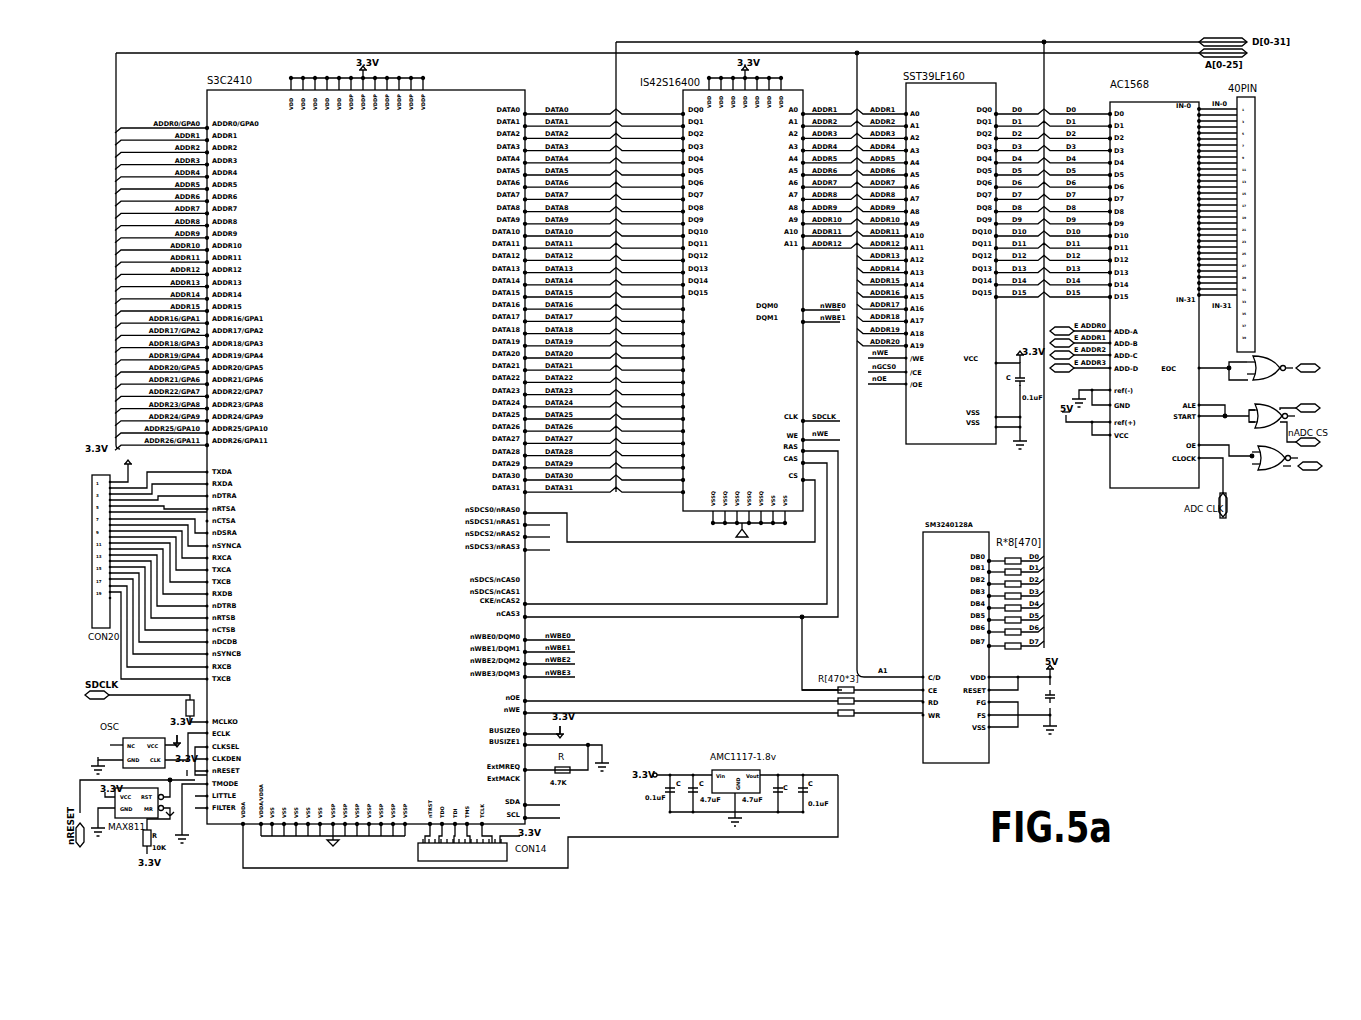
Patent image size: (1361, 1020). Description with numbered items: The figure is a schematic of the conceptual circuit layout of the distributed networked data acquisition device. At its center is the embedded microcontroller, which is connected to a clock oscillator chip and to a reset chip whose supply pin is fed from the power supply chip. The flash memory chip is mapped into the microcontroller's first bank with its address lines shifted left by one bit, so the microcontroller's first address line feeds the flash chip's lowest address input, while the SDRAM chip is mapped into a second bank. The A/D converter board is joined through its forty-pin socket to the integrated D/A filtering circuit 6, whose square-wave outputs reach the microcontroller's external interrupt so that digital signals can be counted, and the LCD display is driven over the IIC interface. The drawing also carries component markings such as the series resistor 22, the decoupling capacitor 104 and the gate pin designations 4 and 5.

The resistor R 22 ohm on SDCLK 22 is at (196, 711).
The capacitor C 104 decoupling 104 is at (1057, 701).
The NOR gate SN74ALS02 (INT0) 5 is at (1278, 372).
The NOR gate SN74ALS02 (EnWRB0) 4 is at (1282, 416).
The integrated D/A filtering circuit 6 is at (1279, 468).